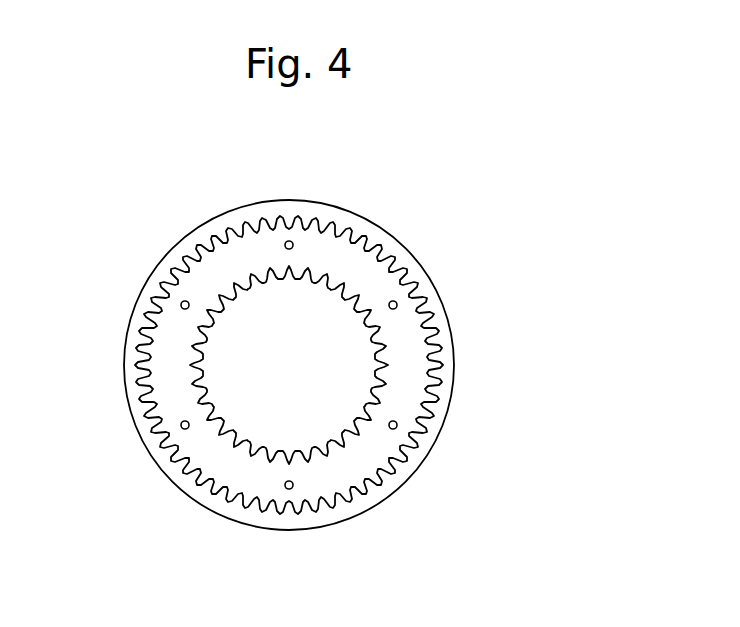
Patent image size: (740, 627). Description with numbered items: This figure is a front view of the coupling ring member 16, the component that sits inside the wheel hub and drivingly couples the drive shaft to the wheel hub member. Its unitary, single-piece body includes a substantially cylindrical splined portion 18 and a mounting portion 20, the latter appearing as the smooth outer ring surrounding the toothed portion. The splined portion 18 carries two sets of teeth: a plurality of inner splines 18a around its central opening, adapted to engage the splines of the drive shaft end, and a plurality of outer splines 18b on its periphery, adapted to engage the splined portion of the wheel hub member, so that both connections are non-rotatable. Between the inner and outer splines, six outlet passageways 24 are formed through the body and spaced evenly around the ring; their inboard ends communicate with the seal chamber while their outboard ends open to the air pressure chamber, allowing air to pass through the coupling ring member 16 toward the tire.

The coupling ring member 16 is at (350, 187).
The splined portion 18 is at (445, 344).
The inner splines 18a is at (246, 440).
The outer splines 18b is at (219, 510).
The mounting portion 20 is at (202, 228).
The outlet passageways 24 is at (289, 240).